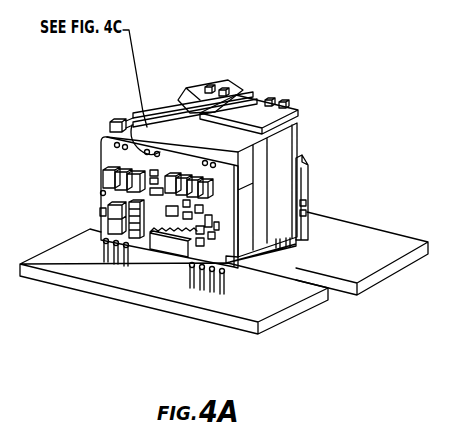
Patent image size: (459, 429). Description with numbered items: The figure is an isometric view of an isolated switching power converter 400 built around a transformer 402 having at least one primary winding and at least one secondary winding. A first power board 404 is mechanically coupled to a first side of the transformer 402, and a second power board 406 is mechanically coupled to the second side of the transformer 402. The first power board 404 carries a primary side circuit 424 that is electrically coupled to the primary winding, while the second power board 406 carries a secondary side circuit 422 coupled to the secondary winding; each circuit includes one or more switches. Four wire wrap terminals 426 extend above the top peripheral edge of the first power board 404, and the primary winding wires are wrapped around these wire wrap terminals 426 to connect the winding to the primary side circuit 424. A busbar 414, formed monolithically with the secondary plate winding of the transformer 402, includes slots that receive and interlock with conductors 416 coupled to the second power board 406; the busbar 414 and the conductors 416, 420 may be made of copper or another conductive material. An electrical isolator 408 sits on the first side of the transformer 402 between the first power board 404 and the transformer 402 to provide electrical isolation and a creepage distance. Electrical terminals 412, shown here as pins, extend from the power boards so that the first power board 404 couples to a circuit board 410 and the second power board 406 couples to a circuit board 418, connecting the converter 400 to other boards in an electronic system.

The isolated switching power converter 400 is at (309, 97).
The transformer 402 is at (261, 163).
The first power board 404 is at (110, 153).
The second power board 406 is at (306, 180).
The electrical isolator 408 is at (249, 241).
The circuit board 410 is at (147, 301).
The electrical terminals 412 is at (100, 252).
The busbar 414 is at (261, 114).
The conductors 416 is at (287, 123).
The circuit board 418 is at (353, 235).
The conductors 420 is at (157, 110).
The secondary side circuit 422 is at (300, 203).
The primary side circuit 424 is at (173, 248).
The wire wrap terminals 426 is at (115, 125).